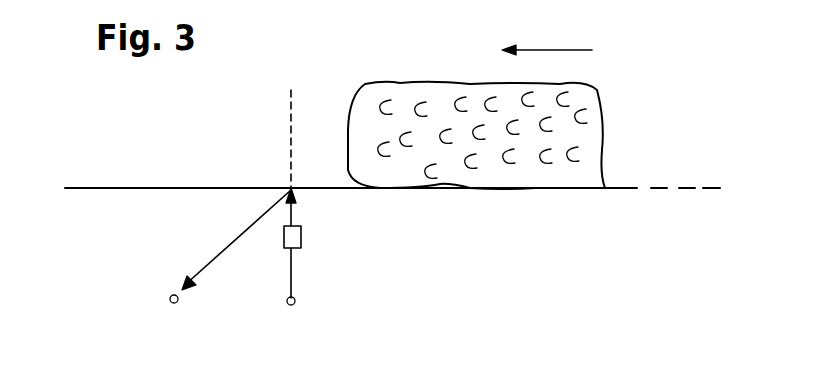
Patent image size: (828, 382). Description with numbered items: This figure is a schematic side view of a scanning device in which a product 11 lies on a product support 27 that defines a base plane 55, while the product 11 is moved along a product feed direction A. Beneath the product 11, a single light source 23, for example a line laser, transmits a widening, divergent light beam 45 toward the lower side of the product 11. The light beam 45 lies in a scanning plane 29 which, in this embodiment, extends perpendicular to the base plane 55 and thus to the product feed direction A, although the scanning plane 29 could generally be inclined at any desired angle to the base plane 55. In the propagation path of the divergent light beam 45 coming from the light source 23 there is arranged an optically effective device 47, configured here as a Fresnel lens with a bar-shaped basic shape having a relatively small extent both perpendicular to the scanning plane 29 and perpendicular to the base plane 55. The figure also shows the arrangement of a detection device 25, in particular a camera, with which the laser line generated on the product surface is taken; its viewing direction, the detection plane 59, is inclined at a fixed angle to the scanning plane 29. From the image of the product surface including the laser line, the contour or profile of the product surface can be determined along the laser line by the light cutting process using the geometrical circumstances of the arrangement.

The product 11 is at (598, 95).
The light source 23 is at (289, 306).
The detection device 25 is at (170, 303).
The product support 27 is at (121, 188).
The scanning plane 29 is at (281, 110).
The divergent light beam 45 is at (293, 268).
The optically effective device 47 is at (302, 240).
The base plane 55 is at (688, 190).
The detection plane 59 is at (232, 240).
The product feed direction A is at (565, 50).